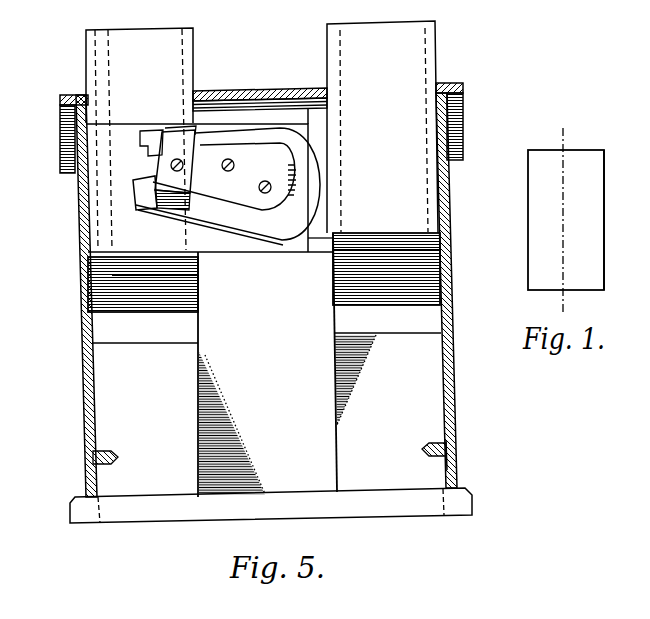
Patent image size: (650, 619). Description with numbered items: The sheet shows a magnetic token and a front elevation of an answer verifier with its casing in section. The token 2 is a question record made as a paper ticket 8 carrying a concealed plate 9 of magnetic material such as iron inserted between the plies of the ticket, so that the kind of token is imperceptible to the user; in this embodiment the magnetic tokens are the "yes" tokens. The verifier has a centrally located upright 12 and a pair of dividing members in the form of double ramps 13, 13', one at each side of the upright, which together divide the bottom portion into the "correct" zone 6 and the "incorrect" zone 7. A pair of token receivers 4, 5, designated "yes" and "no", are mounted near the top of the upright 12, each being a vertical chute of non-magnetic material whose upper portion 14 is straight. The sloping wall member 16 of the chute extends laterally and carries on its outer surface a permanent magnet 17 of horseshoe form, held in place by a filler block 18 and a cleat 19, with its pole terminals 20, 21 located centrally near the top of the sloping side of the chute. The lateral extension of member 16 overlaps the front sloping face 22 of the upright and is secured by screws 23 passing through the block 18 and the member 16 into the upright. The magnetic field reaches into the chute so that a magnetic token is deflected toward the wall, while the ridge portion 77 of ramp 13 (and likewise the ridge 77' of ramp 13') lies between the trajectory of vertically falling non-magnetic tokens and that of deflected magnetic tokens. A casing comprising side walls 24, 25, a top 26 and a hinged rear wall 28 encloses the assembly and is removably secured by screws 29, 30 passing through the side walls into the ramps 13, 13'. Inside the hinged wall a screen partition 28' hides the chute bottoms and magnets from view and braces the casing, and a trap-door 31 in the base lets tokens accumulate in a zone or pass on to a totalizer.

In FIG. 1, the magnetic token 2 is at (608, 158).
In FIG. 1, the paper ticket 8 is at (533, 255).
In FIG. 1, the concealed plate of magnetic material 9 is at (599, 208).
In FIG. 5, the token receiver 4 is at (74, 61).
In FIG. 5, the token receiver 5 is at (447, 50).
In FIG. 5, the classification zone 6 is at (356, 458).
In FIG. 5, the classification zone 7 is at (212, 275).
In FIG. 5, the upright 12 is at (218, 348).
In FIG. 5, the double ramp 13 is at (77, 444).
In FIG. 5, the double ramp 13' is at (457, 424).
In FIG. 5, the upper portion of chute 14 is at (173, 81).
In FIG. 5, the sloping wall member 16 is at (118, 172).
In FIG. 5, the permanent magnet 17 is at (240, 226).
In FIG. 5, the filler block 18 is at (268, 198).
In FIG. 5, the cleat 19 is at (189, 157).
In FIG. 5, the pole terminal 20 is at (150, 134).
In FIG. 5, the pole terminal 21 is at (143, 197).
In FIG. 5, the front sloping face 22 is at (318, 121).
In FIG. 5, the screws 23 is at (258, 185).
In FIG. 5, the side wall 24 is at (82, 382).
In FIG. 5, the side wall 25 is at (445, 217).
In FIG. 5, the top 26 is at (251, 92).
In FIG. 5, the hinged rear wall 28 is at (119, 297).
In FIG. 5, the screen partition 28' is at (411, 269).
In FIG. 5, the screw 29 is at (85, 473).
In FIG. 5, the screw 30 is at (457, 463).
In FIG. 5, the trap-door 31 is at (440, 500).
In FIG. 5, the ridge portion 77 is at (145, 332).
In FIG. 5, the ridge portion 77' is at (387, 327).